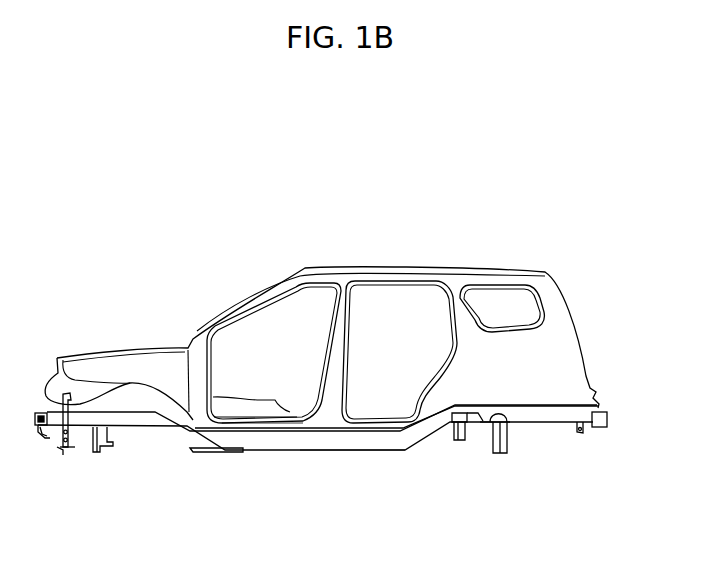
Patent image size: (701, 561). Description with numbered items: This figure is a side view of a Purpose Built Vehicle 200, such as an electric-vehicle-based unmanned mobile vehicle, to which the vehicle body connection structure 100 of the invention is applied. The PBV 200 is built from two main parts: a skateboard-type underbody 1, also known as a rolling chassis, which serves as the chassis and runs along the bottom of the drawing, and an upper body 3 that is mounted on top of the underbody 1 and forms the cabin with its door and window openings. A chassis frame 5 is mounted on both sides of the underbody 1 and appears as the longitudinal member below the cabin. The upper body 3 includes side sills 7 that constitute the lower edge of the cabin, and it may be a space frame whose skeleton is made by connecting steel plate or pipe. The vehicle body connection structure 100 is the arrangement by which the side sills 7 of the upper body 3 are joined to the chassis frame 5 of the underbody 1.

The underbody 1 is at (188, 448).
The upper body 3 is at (530, 271).
The chassis frame 5 is at (372, 439).
The side sill 7 is at (271, 425).
The vehicle body connection structure 100 is at (322, 448).
The Purpose Built Vehicle 200 is at (135, 237).